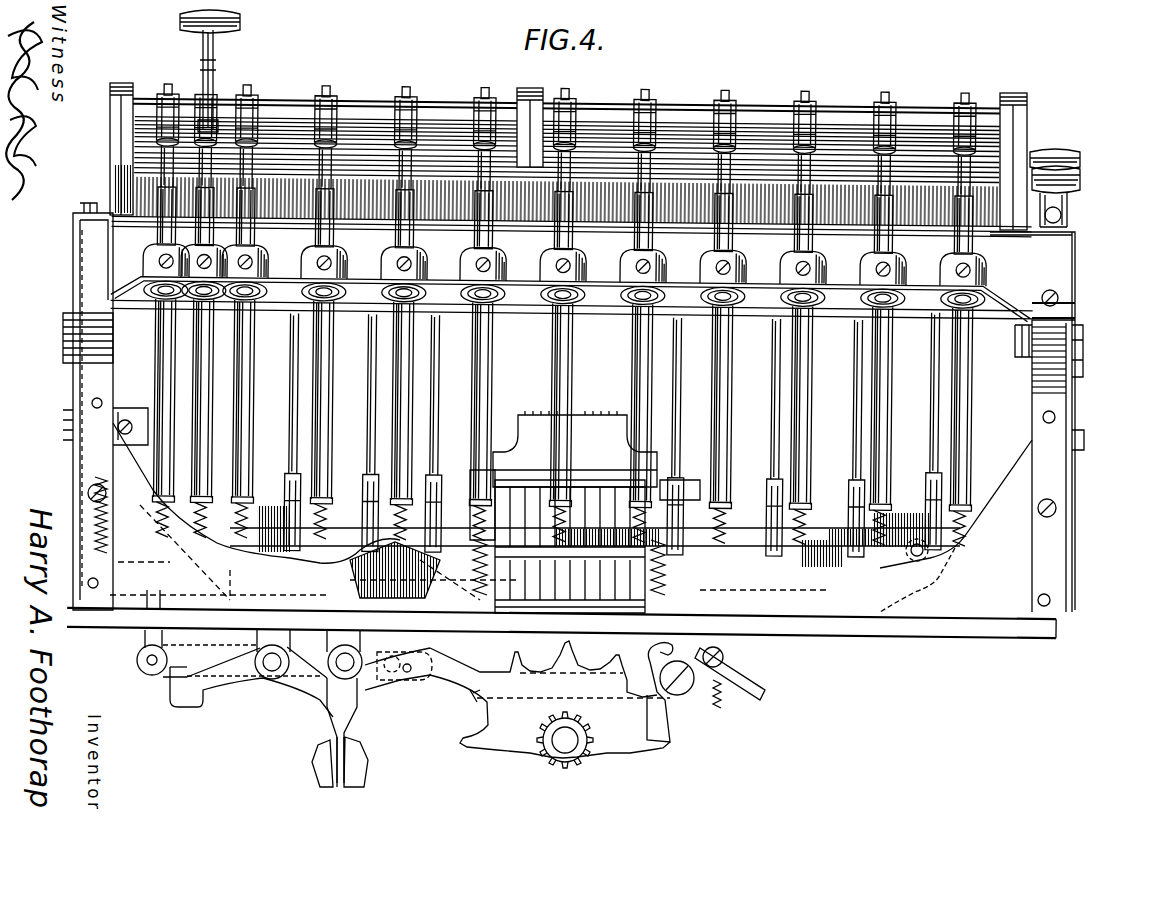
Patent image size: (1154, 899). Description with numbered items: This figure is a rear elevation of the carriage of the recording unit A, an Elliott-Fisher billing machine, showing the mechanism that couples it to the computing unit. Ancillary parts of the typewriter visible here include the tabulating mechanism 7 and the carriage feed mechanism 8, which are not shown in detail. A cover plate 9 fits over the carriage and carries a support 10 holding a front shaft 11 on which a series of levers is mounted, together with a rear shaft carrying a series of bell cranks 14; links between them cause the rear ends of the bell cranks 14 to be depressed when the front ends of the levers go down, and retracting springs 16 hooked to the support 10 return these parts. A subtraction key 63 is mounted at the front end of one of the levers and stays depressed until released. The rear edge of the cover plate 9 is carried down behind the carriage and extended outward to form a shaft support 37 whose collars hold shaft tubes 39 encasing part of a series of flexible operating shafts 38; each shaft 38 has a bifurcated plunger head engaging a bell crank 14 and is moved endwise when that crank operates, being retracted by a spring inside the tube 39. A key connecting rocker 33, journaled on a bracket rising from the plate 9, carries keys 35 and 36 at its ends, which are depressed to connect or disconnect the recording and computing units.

The subtraction key 63 is at (228, 71).
The bell crank 14 is at (412, 96).
The retracting spring 16 is at (470, 101).
The front shaft 11 is at (478, 182).
The support 10 is at (117, 168).
The cover plate 9 is at (95, 234).
The shaft support 37 is at (118, 278).
The shaft tube 39 is at (878, 432).
The flexible operating shaft 38 is at (595, 451).
The key 35 is at (1082, 157).
The key 36 is at (1082, 183).
The key connecting rocker 33 is at (1068, 204).
The recording unit A is at (1087, 392).
The tabulating mechanism 7 is at (491, 625).
The carriage feed mechanism 8 is at (630, 747).